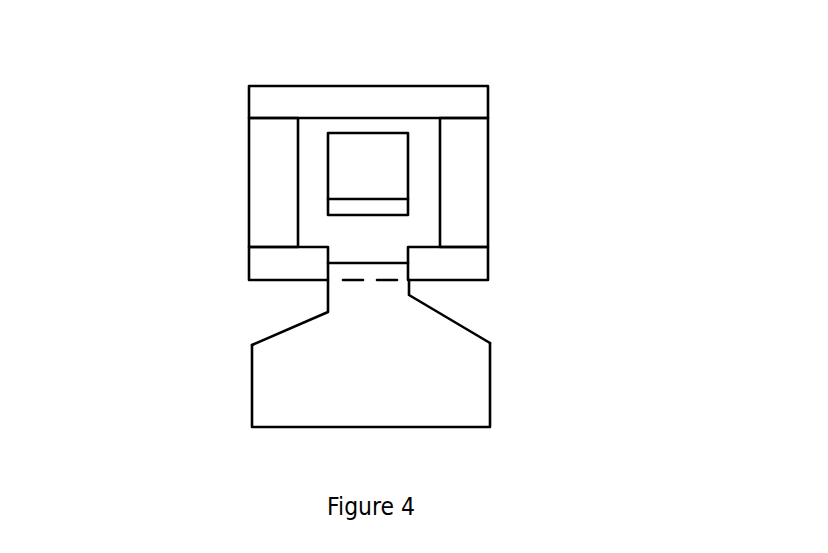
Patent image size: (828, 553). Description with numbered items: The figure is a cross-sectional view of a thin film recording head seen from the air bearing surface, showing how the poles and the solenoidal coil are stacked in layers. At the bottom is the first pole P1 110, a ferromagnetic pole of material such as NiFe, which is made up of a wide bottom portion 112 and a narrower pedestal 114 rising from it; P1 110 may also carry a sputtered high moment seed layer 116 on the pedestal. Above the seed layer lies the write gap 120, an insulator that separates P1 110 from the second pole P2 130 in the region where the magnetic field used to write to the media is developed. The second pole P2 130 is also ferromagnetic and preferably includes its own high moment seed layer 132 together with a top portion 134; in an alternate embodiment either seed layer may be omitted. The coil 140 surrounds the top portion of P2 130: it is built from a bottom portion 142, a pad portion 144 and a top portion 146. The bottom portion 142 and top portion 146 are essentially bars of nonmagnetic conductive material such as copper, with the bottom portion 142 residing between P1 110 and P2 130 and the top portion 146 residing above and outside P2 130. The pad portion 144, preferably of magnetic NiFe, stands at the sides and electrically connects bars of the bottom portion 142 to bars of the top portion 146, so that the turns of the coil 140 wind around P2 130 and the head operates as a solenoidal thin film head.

The first pole (P1) 110 is at (171, 338).
The bottom portion 112 is at (393, 427).
The pedestal 114 is at (411, 293).
The high moment seed layer 116 is at (328, 253).
The write gap 120 is at (143, 232).
The second pole (P2) 130 is at (106, 177).
The high moment seed layer 132 is at (330, 208).
The top portion 134 is at (410, 148).
The coil 140 is at (600, 182).
The bottom portion 142 is at (488, 282).
The pad portion 144 is at (249, 135).
The top portion 146 is at (331, 86).